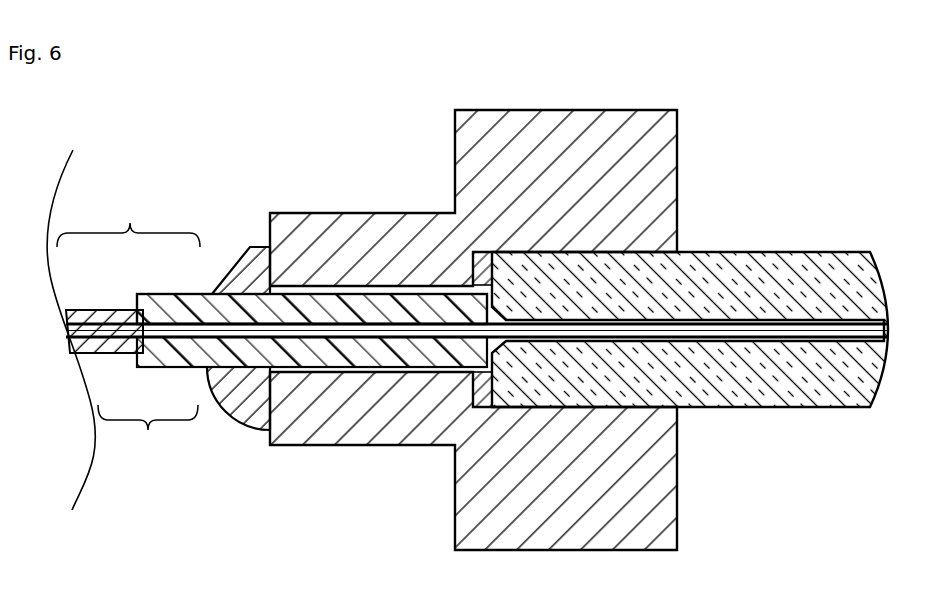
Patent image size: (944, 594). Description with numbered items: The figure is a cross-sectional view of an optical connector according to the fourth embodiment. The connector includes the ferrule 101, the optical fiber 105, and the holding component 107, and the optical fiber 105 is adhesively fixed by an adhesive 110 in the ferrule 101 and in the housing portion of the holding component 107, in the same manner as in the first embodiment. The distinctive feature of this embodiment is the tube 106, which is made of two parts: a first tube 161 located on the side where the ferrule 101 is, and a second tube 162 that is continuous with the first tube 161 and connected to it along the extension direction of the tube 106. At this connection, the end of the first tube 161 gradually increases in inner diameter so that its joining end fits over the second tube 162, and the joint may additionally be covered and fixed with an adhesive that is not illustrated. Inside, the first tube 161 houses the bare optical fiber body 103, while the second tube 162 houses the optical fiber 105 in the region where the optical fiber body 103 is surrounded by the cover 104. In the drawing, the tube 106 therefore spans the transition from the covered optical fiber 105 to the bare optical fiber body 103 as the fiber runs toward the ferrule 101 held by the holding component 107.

The ferrule 101 is at (770, 251).
The optical fiber body 103 is at (158, 362).
The cover 104 is at (113, 353).
The optical fiber 105 is at (148, 435).
The tube 106 is at (128, 219).
The holding component 107 is at (677, 152).
The adhesive 110 is at (470, 258).
The first tube 161 is at (172, 294).
The second tube 162 is at (95, 310).